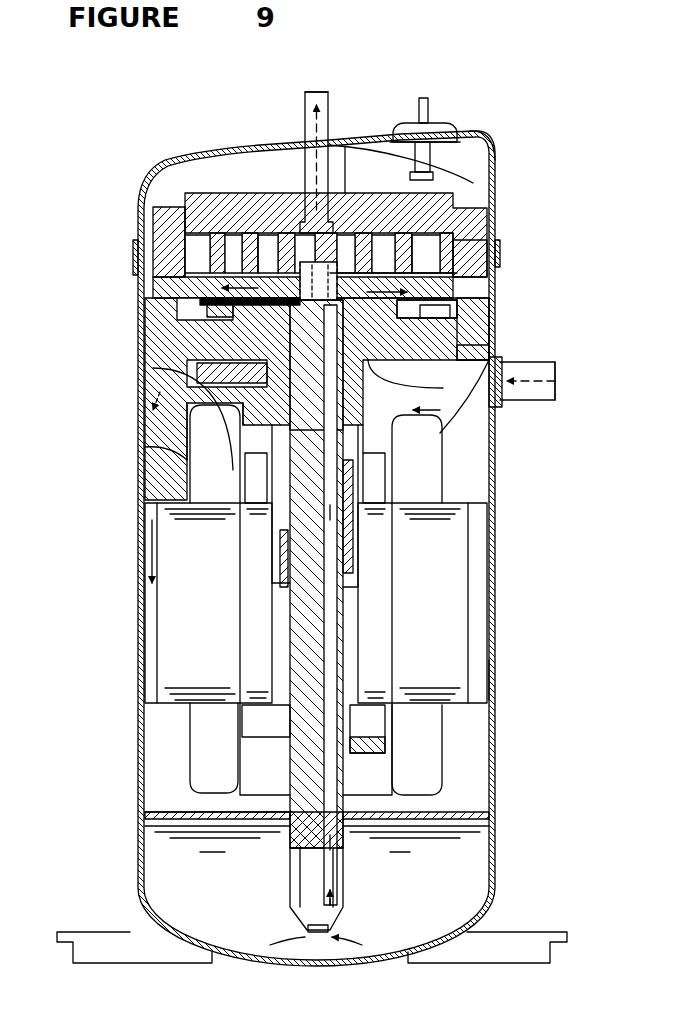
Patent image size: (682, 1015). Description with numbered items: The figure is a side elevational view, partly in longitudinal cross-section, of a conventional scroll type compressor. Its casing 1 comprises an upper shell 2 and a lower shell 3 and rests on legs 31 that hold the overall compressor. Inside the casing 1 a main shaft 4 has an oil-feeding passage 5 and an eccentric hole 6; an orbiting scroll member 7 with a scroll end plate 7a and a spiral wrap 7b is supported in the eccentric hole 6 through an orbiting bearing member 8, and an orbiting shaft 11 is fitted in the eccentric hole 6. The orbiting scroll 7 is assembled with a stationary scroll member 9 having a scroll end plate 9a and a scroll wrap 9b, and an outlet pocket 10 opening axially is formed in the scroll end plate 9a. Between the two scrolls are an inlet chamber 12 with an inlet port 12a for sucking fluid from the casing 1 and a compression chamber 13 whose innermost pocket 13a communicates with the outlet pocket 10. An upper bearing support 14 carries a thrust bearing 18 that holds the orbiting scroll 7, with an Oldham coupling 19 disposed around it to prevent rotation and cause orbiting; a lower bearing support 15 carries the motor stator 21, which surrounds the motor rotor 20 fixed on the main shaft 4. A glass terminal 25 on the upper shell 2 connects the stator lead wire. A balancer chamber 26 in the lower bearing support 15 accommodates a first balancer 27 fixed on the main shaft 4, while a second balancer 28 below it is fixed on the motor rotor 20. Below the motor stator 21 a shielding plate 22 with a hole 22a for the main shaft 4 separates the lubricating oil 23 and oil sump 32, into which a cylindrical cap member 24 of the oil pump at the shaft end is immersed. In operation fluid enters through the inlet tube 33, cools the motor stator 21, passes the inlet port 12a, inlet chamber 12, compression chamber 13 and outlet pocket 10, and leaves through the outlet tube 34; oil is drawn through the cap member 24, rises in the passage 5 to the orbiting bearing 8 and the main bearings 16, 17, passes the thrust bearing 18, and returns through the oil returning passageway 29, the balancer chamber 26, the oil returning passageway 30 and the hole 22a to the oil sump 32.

The casing 1 is at (498, 517).
The upper shell 2 is at (490, 150).
The lower shell 3 is at (494, 684).
The main shaft 4 is at (268, 627).
The oil-feeding passage 5 is at (333, 664).
The eccentric hole 6 is at (240, 438).
The orbiting scroll member 7 is at (443, 280).
The scroll end plate 7a is at (420, 270).
The spiral wrap 7b is at (190, 250).
The orbiting bearing member 8 is at (420, 432).
The stationary scroll member 9 is at (450, 250).
The scroll end plate 9a is at (355, 203).
The scroll wrap 9b is at (410, 237).
The outlet pocket 10 is at (305, 227).
The orbiting shaft 11 is at (237, 253).
The inlet chamber 12 is at (157, 237).
The inlet port 12a is at (477, 257).
The compression chamber 13 is at (245, 240).
The innermost pocket 13a is at (267, 252).
The upper bearing support 14 is at (470, 332).
The lower bearing support 15 is at (540, 373).
The main bearing 16 is at (168, 445).
The main bearing 17 is at (288, 563).
The thrust bearing 18 is at (200, 300).
The Oldham coupling 19 is at (433, 310).
The motor rotor 20 is at (367, 612).
The motor stator 21 is at (437, 582).
The shielding plate 22 is at (453, 810).
The hole 22a is at (287, 822).
The lubricating oil 23 is at (467, 867).
The cylindrical cap member 24 is at (343, 883).
The glass terminal 25 is at (430, 100).
The balancer chamber 26 is at (457, 380).
The first balancer 27 is at (210, 372).
The second balancer 28 is at (373, 743).
The oil returning passageway 29 is at (205, 318).
The oil returning passageway 30 is at (153, 437).
The legs 31 is at (510, 947).
The oil sump 32 is at (147, 860).
The inlet tube 33 is at (555, 393).
The outlet tube 34 is at (322, 96).